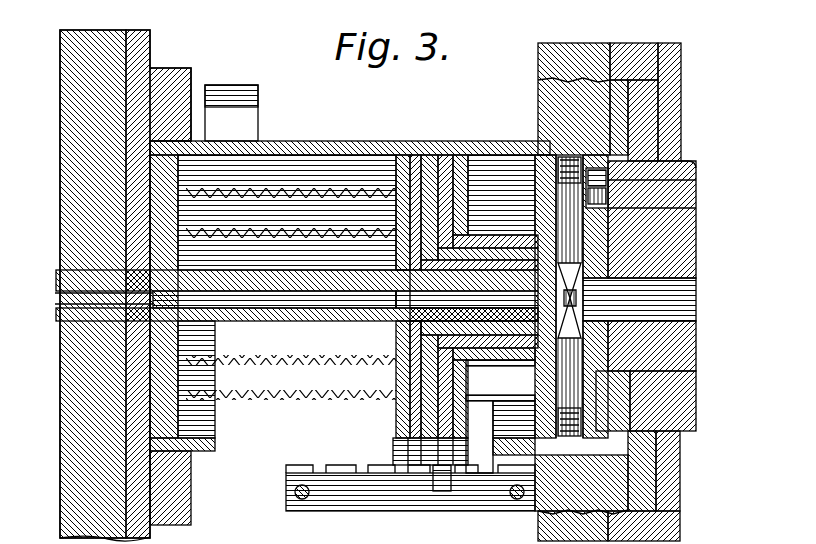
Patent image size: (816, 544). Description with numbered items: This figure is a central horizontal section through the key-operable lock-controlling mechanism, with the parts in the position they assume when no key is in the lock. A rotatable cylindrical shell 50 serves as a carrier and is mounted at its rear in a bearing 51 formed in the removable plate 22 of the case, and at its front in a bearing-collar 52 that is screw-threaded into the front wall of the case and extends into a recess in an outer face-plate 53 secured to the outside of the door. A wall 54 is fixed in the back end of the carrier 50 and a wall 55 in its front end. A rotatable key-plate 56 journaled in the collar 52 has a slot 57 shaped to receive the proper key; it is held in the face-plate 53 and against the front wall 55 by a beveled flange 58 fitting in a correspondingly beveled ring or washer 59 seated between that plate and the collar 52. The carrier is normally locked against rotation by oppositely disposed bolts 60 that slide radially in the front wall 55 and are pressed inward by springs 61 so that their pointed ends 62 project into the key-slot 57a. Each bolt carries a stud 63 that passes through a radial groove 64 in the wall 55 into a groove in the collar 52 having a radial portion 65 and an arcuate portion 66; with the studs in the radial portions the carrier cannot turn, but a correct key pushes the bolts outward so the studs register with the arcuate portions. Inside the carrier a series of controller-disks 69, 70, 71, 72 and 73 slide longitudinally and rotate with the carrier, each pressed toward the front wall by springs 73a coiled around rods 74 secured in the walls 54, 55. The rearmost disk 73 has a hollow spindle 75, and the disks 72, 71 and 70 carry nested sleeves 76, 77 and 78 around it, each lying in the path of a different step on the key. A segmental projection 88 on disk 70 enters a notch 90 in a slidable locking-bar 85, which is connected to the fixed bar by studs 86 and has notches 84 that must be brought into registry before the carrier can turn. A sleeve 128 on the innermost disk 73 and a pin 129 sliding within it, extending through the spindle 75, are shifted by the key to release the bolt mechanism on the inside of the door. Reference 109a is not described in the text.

The removable plate 22 is at (133, 510).
The rotatable cylindrical shell 50 is at (318, 133).
The bearing 51 is at (157, 443).
The bearing-collar 52 is at (535, 450).
The outer face-plate 53 is at (663, 133).
The wall 54 is at (153, 388).
The wall 55 is at (579, 330).
The rotatable key-plate 56 is at (680, 346).
The slot 57 is at (692, 280).
The key-slot 57a is at (580, 268).
The beveled flange 58 is at (672, 438).
The beveled ring or washer 59 is at (647, 467).
The bolts 60 is at (577, 238).
The springs 61 is at (565, 150).
The inner pointed ends 62 is at (600, 285).
The stud or lug 63 is at (603, 187).
The radial groove 64 is at (688, 158).
The radial portion 65 is at (655, 140).
The arcuate portion 66 is at (690, 172).
The controller-disk 69 is at (468, 150).
The controller-disk 70 is at (453, 157).
The controller-disk 71 is at (427, 160).
The controller-disk 72 is at (407, 158).
The rearmost controller-disk 73 is at (395, 155).
The springs 73a is at (262, 183).
The rods 74 is at (288, 222).
The hollow spindle 75 is at (405, 300).
The sleeve 76 is at (417, 307).
The sleeve 77 is at (383, 340).
The sleeve 78 is at (430, 317).
The notches 84 is at (348, 460).
The slidable locking-bar 85 is at (370, 495).
The studs 86 is at (288, 488).
The segmental projection 88 is at (435, 483).
The notch 90 is at (423, 480).
The cap 109a is at (231, 113).
The sleeve 128 is at (60, 296).
The pin 129 is at (60, 285).